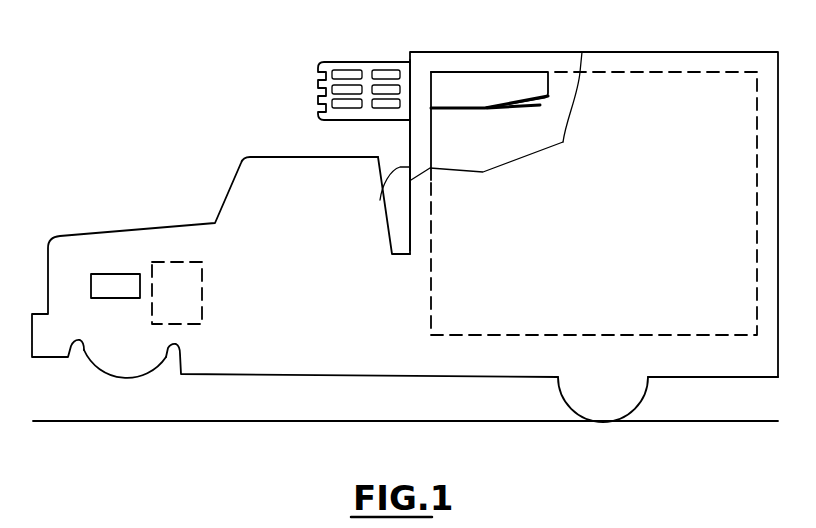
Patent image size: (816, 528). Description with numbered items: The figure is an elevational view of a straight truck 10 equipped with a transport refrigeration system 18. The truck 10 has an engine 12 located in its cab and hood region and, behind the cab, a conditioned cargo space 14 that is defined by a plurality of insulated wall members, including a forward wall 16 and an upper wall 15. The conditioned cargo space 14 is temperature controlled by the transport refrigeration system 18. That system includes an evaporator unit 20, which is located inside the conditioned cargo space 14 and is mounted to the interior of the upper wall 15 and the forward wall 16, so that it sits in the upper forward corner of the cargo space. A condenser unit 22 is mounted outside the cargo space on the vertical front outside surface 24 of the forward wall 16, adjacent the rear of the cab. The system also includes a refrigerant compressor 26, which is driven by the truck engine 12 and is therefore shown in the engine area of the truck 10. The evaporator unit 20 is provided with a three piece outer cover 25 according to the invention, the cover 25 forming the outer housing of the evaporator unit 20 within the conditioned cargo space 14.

The straight truck 10 is at (110, 80).
The engine 12 is at (203, 289).
The conditioned cargo space 14 is at (481, 159).
The upper wall 15 is at (562, 74).
The forward wall 16 is at (403, 149).
The transport refrigeration system 18 is at (252, 68).
The evaporator unit 20 is at (481, 100).
The condenser unit 22 is at (357, 62).
The vertical front outside surface 24 is at (385, 189).
The three piece outer cover 25 is at (532, 108).
The refrigerant compressor 26 is at (137, 275).